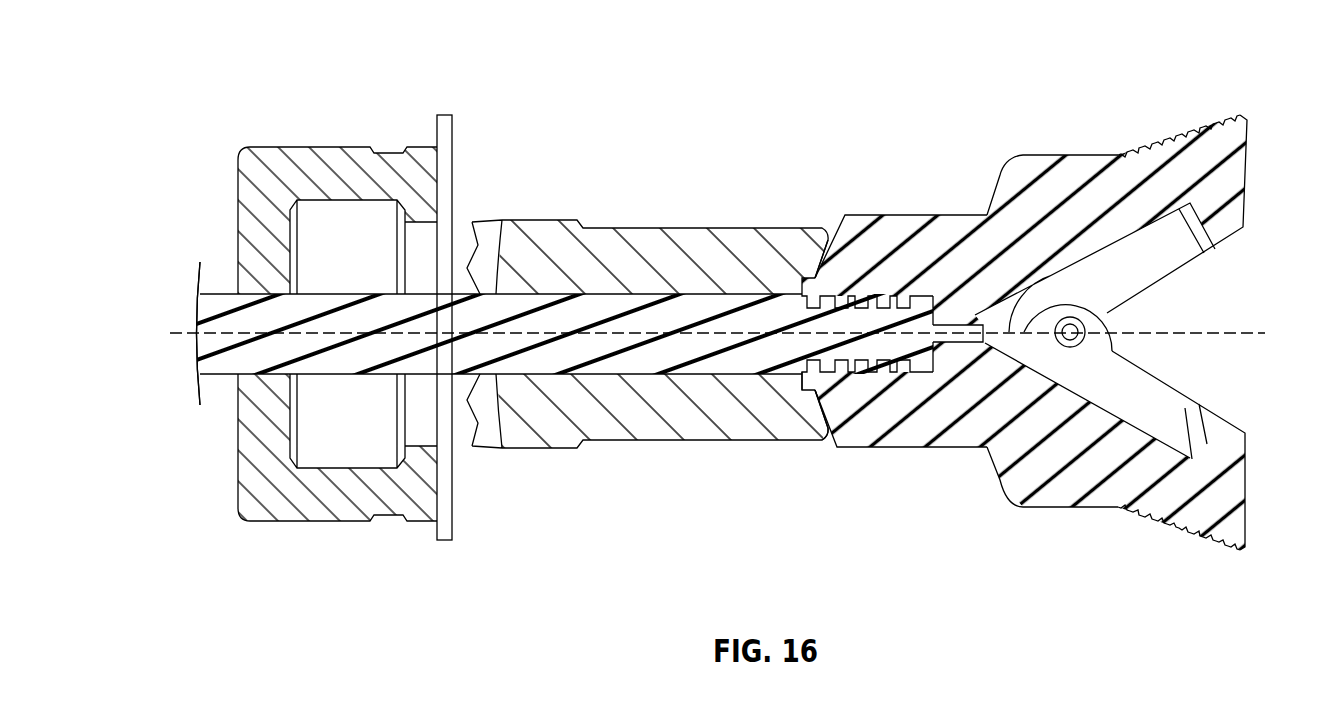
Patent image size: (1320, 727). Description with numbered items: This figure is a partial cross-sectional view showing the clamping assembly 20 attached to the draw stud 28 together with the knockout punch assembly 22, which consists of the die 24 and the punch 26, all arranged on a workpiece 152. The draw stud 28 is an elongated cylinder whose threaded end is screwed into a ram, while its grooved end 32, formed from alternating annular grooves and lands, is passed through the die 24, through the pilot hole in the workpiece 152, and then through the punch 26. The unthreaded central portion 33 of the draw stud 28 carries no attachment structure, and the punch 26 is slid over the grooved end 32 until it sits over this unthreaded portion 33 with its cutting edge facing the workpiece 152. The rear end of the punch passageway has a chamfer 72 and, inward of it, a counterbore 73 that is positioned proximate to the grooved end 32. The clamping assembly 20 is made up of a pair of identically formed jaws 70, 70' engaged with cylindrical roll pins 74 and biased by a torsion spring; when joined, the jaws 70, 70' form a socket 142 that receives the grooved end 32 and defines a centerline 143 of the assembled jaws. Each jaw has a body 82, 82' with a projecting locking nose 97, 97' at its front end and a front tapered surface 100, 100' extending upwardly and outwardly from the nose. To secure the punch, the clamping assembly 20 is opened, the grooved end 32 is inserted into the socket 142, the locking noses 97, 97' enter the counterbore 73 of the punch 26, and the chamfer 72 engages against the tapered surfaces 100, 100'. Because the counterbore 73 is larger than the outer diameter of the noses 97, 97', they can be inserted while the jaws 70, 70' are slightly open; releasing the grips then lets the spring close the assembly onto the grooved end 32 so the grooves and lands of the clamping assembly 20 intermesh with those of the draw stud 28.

The clamping assembly 20 is at (1047, 85).
The knockout punch assembly 22 is at (687, 170).
The die 24 is at (290, 508).
The punch 26 is at (672, 405).
The draw stud 28 is at (582, 300).
The grooved end 32 is at (894, 337).
The unthreaded central portion 33 is at (625, 345).
The jaw 70 is at (1111, 217).
The jaw 70' is at (1115, 459).
The chamfer 72 is at (815, 437).
The counterbore 73 is at (806, 395).
The roll pin 74 is at (1090, 328).
The body 82 is at (1024, 220).
The body 82' is at (1023, 446).
The locking nose 97 is at (803, 208).
The locking nose 97' is at (780, 464).
The front tapered surface 100 is at (867, 203).
The front tapered surface 100' is at (867, 478).
The socket 142 is at (932, 300).
The centerline 143 is at (1190, 334).
The workpiece 152 is at (456, 537).